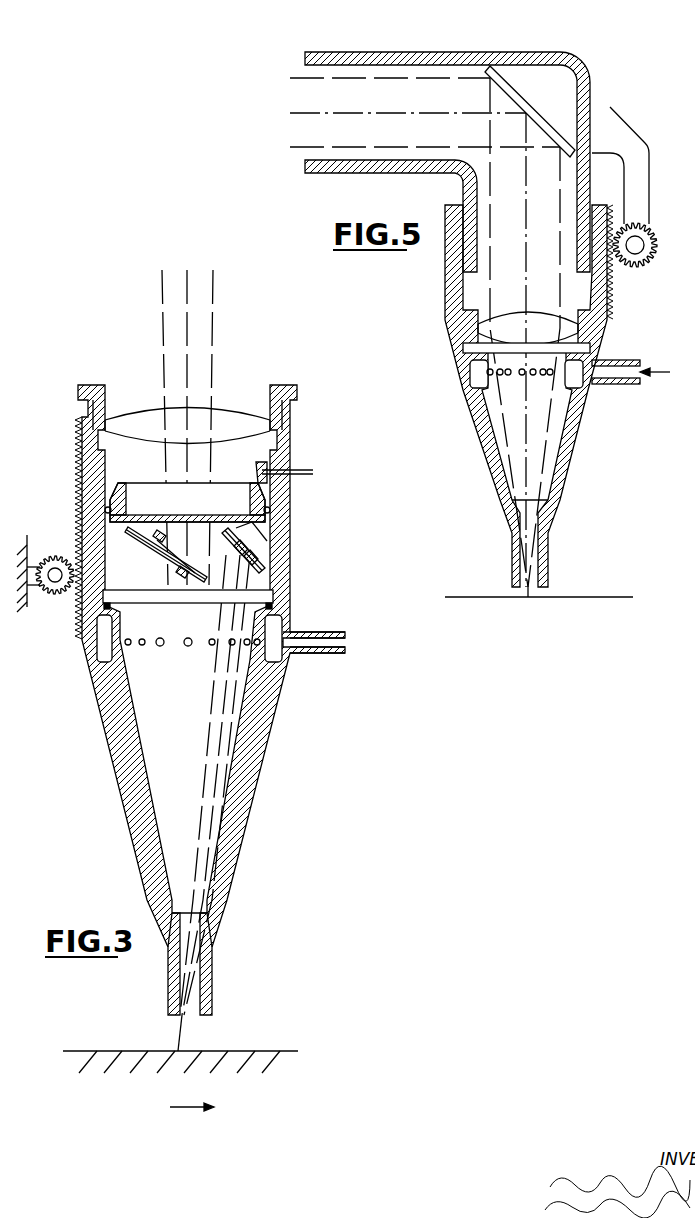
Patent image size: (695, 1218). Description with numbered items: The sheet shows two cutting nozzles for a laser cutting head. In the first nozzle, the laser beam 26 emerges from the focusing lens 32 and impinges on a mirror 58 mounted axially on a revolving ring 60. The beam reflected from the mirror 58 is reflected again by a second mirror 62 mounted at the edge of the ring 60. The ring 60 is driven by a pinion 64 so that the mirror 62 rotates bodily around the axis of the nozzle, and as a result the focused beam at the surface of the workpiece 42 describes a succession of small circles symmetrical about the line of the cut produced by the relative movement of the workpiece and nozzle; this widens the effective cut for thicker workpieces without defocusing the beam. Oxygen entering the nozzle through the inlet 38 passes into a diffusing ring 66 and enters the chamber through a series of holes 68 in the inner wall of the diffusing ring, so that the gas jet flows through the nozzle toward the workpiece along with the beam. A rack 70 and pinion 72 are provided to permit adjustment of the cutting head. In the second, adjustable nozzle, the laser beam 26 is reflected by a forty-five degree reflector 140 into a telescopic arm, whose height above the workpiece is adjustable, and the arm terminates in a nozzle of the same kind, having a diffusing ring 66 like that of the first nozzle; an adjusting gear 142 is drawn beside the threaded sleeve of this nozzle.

In FIG. 3, the laser beam 26 is at (213, 303).
In FIG. 5, the laser beam 26 is at (427, 148).
In FIG. 3, the focusing lens 32 is at (223, 417).
In FIG. 3, the inlet 38 is at (317, 632).
In FIG. 3, the workpiece 42 is at (265, 1068).
In FIG. 3, the mirror 58 is at (156, 535).
In FIG. 3, the revolving ring 60 is at (268, 500).
In FIG. 3, the mirror 62 is at (265, 546).
In FIG. 3, the pinion 64 is at (258, 468).
In FIG. 3, the diffusing ring 66 is at (275, 606).
In FIG. 5, the diffusing ring 66 is at (592, 356).
In FIG. 3, the holes 68 is at (188, 646).
In FIG. 3, the rack 70 is at (77, 613).
In FIG. 3, the pinion 72 is at (53, 594).
In FIG. 5, the 45° reflector 140 is at (553, 125).
In FIG. 5, the adjusting gear 142 is at (643, 240).